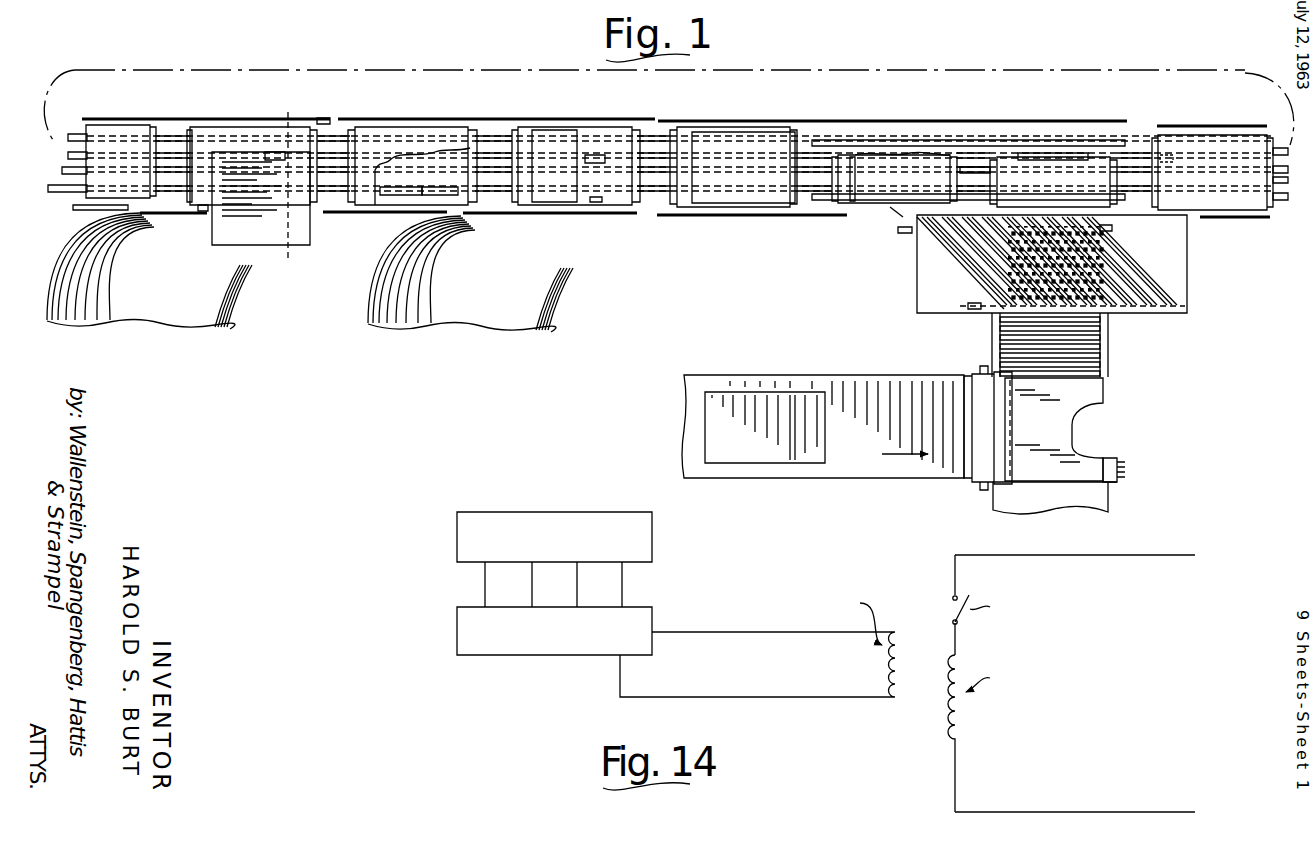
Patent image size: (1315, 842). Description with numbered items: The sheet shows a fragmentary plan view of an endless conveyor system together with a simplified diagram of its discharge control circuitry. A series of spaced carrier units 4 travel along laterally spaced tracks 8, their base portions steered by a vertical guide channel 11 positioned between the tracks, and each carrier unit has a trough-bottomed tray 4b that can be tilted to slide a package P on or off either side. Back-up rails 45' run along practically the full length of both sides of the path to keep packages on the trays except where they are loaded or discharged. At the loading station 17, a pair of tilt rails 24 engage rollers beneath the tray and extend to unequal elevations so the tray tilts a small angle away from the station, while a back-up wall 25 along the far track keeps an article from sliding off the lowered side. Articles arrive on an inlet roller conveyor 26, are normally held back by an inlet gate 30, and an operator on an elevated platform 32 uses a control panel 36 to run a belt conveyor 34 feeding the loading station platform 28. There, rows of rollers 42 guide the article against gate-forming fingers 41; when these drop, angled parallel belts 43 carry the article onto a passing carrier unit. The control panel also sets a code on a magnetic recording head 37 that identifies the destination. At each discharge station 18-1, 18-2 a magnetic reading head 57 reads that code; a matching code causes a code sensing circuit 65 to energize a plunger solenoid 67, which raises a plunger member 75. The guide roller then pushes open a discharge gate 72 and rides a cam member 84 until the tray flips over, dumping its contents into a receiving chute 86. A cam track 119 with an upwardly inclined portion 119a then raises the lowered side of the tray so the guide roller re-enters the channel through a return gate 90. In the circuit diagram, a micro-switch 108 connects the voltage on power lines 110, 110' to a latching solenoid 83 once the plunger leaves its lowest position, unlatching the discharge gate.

In FIG. 1, the carrier unit 4 is at (250, 127).
In FIG. 1, the tray 4b is at (203, 209).
In FIG. 1, the track 8 is at (166, 185).
In FIG. 1, the guide channel 11 is at (178, 160).
In FIG. 1, the loading station 17 is at (1193, 233).
In FIG. 1, the discharge station 18-1 is at (633, 237).
In FIG. 1, the discharge station 18-2 is at (318, 228).
In FIG. 1, the tilt rail 24 is at (825, 140).
In FIG. 1, the back-up wall 25 is at (897, 120).
In FIG. 1, the inlet roller conveyor 26 is at (1090, 345).
In FIG. 1, the loading station platform 28 is at (1173, 268).
In FIG. 1, the inlet gate 30 is at (1092, 317).
In FIG. 1, the elevated platform 32 is at (1092, 392).
In FIG. 1, the belt conveyor 34 is at (870, 392).
In FIG. 1, the control panel 36 is at (1108, 475).
In FIG. 1, the magnetic recording head 37 is at (1035, 153).
In FIG. 1, the gate-forming fingers 41 is at (1060, 218).
In FIG. 1, the rollers 42 is at (973, 277).
In FIG. 1, the parallel belts 43 is at (943, 248).
In FIG. 1, the back-up rail 45' is at (679, 169).
In FIG. 1, the magnetic reading head 57 is at (230, 130).
In FIG. 14, the magnetic reading head 57 is at (567, 512).
In FIG. 14, the code sensing circuit 65 is at (470, 655).
In FIG. 14, the plunger solenoid 67 is at (897, 692).
In FIG. 1, the discharge gate 72 is at (320, 123).
In FIG. 1, the plunger member 75 is at (628, 176).
In FIG. 14, the latching solenoid 83 is at (950, 687).
In FIG. 1, the cam member 84 is at (273, 157).
In FIG. 1, the receiving chute 86 is at (180, 322).
In FIG. 1, the return gate 90 is at (131, 160).
In FIG. 14, the micro-switch 108 is at (954, 612).
In FIG. 14, the power line 110 is at (1091, 575).
In FIG. 14, the power line 110' is at (1090, 793).
In FIG. 1, the cam track 119 is at (395, 190).
In FIG. 1, the inclined portion of cam track 119a is at (103, 206).
In FIG. 1, the package P is at (550, 130).